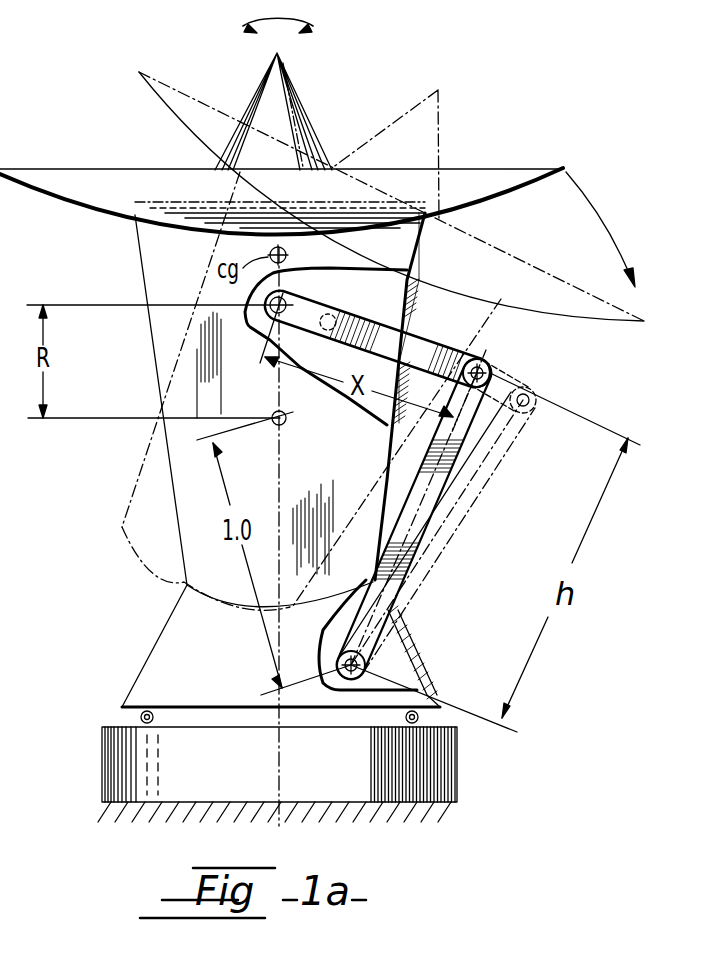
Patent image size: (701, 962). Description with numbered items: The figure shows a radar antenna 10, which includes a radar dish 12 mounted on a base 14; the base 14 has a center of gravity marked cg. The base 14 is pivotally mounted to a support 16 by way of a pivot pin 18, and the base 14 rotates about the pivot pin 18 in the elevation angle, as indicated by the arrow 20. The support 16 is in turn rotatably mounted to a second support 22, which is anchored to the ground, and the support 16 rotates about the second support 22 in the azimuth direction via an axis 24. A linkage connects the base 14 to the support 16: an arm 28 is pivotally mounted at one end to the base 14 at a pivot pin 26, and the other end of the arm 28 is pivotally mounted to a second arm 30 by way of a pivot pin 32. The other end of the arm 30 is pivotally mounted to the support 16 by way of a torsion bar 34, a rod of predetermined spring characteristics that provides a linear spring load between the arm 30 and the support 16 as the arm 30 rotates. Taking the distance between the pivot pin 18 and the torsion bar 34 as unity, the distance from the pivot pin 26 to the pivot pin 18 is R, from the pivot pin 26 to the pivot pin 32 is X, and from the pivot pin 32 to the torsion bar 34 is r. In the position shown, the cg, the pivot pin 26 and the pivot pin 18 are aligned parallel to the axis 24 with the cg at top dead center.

The radar antenna 10 is at (497, 160).
The radar dish 12 is at (568, 168).
The base 14 is at (153, 354).
The support 16 is at (162, 633).
The pivot pin 18 is at (283, 423).
The arrow 20 is at (603, 223).
The second support 22 is at (458, 765).
The axis 24 is at (284, 770).
The pivot pin 26 is at (255, 330).
The arm 28 is at (417, 353).
The arm 30 is at (437, 487).
The pivot pin 32 is at (487, 363).
The torsion bar 34 is at (365, 657).